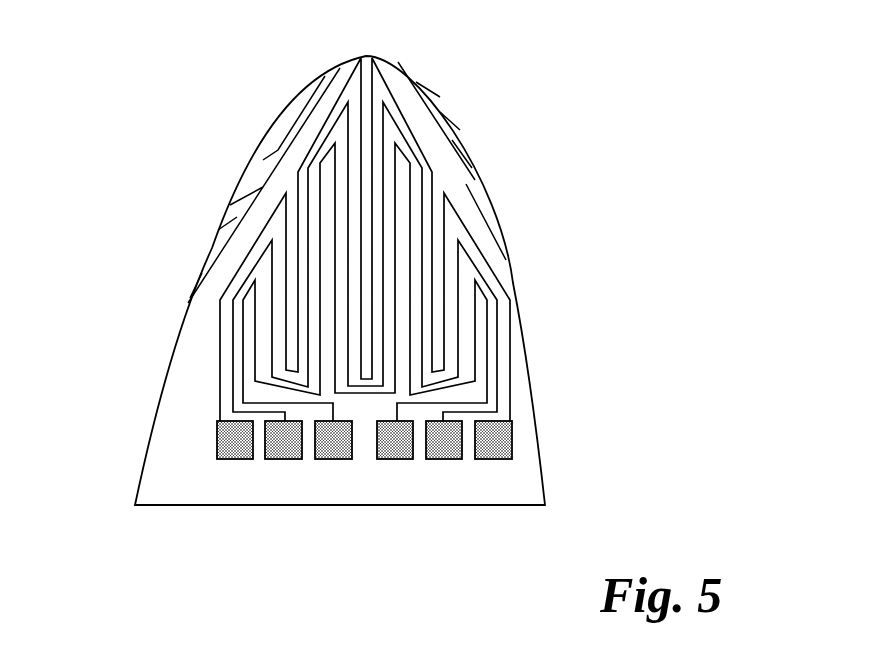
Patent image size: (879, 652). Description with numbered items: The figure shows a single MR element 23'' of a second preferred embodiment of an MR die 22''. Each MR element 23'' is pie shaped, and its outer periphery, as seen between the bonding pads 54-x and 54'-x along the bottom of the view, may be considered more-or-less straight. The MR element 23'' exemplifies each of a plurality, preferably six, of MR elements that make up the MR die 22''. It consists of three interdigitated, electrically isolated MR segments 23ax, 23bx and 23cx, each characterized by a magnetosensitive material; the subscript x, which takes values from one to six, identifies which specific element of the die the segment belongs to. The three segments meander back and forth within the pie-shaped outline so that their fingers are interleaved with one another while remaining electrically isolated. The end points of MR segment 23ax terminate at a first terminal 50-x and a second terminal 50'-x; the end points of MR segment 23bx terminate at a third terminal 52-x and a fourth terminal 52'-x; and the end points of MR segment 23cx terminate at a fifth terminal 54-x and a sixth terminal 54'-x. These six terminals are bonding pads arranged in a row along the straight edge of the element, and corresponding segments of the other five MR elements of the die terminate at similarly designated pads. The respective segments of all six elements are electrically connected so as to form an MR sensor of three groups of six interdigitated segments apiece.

The MR die 22'' is at (291, 316).
The MR element 23'' is at (333, 182).
The MR segment 23ax is at (481, 320).
The MR segment 23bx is at (462, 250).
The MR segment 23cx is at (414, 136).
The fifth terminal 54-x is at (237, 459).
The third terminal 52-x is at (289, 459).
The first terminal 50-x is at (333, 459).
The second terminal 50'-x is at (403, 508).
The fourth terminal 52'-x is at (448, 486).
The sixth terminal 54'-x is at (516, 504).